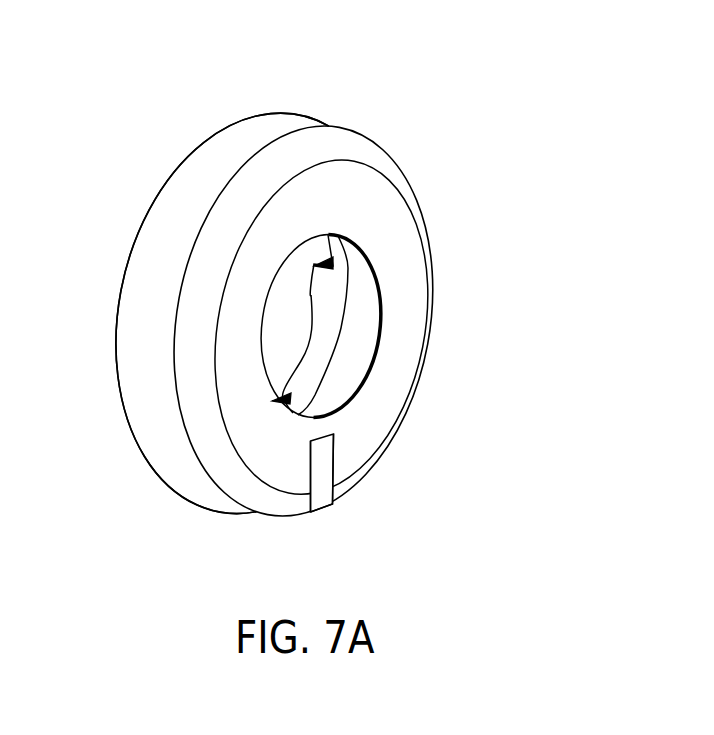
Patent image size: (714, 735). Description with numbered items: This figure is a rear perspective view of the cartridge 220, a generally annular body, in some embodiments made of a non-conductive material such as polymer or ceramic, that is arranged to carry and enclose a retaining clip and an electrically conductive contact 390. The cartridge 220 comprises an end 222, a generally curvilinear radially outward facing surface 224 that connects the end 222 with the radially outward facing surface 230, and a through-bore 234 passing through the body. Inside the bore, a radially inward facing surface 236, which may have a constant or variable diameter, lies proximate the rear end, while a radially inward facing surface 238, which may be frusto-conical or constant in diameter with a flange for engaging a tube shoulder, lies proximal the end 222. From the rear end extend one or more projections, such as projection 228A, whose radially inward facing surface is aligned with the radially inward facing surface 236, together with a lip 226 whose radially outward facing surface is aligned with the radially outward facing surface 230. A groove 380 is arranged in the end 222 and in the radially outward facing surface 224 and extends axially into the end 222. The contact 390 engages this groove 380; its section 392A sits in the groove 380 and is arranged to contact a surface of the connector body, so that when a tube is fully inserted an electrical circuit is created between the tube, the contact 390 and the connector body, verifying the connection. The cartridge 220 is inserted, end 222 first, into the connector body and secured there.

The cartridge 220 is at (320, 302).
The end 222 is at (402, 283).
The radially outward facing surface 224 is at (347, 145).
The lip 226 is at (147, 216).
The projection 228A is at (302, 371).
The radially outward facing surface 230 is at (295, 113).
The through-bore 234 is at (312, 340).
The radially inward facing surface 236 is at (328, 302).
The radially inward facing surface 238 is at (357, 335).
The groove 380 is at (335, 462).
The contact 390 is at (327, 498).
The section 392A is at (320, 460).